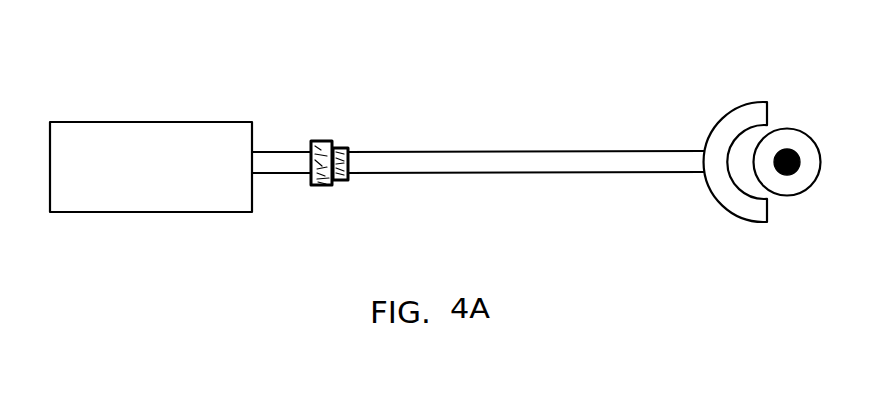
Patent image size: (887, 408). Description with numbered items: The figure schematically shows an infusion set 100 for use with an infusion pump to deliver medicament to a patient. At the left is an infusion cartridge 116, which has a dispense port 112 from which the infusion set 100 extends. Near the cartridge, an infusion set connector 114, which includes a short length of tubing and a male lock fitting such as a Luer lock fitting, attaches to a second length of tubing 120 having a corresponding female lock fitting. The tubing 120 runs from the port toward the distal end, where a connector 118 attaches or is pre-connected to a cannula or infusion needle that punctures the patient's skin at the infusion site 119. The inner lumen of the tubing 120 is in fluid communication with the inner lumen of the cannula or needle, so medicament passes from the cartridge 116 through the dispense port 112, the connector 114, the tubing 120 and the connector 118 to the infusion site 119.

The infusion set 100 is at (412, 104).
The dispense port 112 is at (253, 163).
The infusion set connector 114 is at (332, 185).
The infusion cartridge 116 is at (148, 132).
The connector 118 is at (717, 132).
The infusion site 119 is at (797, 142).
The tubing 120 is at (463, 163).